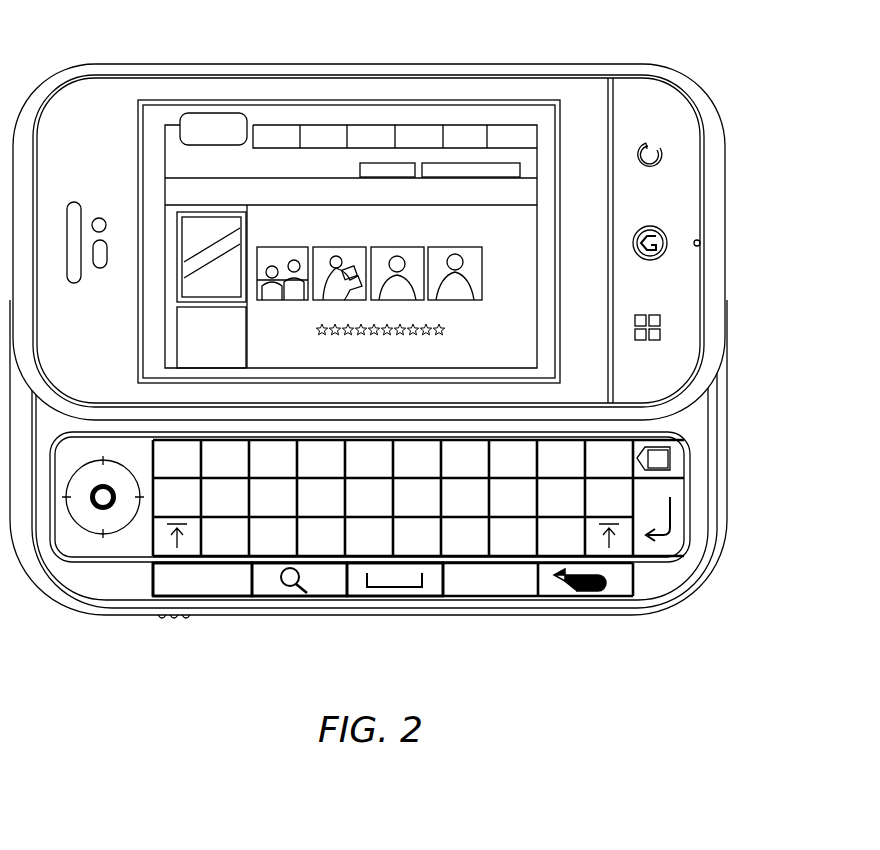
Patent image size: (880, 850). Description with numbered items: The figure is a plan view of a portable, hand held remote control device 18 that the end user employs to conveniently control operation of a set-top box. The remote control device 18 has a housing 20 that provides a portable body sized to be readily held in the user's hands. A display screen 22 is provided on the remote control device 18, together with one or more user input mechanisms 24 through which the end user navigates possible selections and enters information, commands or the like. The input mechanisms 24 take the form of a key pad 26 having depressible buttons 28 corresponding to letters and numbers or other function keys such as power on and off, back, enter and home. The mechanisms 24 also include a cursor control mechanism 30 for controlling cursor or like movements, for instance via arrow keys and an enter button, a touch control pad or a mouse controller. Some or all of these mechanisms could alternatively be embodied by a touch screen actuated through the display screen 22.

The remote control device 18 is at (700, 51).
The housing 20 is at (724, 336).
The display screen 22 is at (250, 169).
The user input mechanisms 24 is at (232, 587).
The key pad 26 is at (282, 587).
The depressible buttons 28 is at (427, 587).
The cursor control mechanism 30 is at (62, 440).